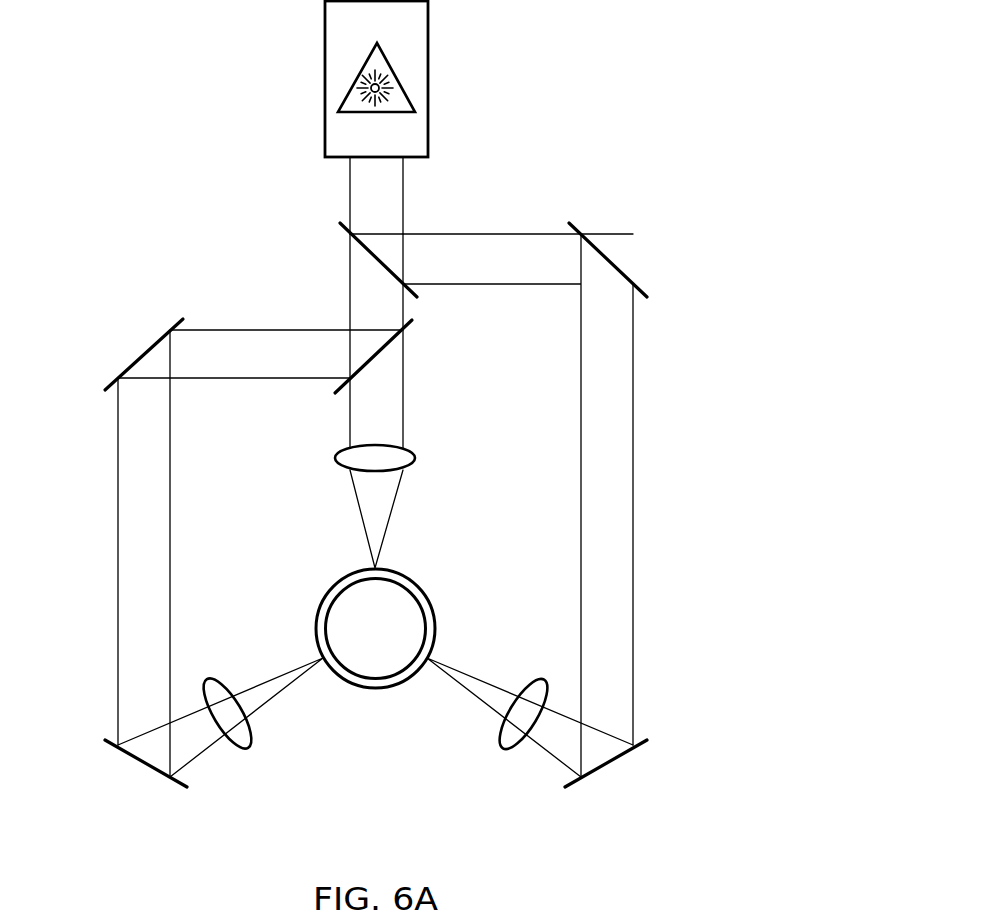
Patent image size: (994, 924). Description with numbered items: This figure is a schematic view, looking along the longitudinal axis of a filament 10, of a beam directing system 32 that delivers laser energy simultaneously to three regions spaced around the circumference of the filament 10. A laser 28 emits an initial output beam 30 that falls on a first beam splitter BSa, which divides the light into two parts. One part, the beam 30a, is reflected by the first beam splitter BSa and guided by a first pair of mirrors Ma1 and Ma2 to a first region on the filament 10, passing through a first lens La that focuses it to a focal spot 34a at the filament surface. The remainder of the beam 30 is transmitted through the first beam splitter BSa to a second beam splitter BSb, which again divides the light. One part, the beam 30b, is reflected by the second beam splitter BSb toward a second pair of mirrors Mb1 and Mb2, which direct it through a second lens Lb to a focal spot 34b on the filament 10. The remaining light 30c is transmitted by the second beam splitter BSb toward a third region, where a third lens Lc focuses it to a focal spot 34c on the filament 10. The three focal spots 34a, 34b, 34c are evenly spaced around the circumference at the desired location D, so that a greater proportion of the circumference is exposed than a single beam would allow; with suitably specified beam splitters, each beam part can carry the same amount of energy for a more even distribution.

The laser 28 is at (428, 48).
The initial output beam 30 is at (349, 188).
The first beam part 30a is at (468, 233).
The second beam part 30b is at (262, 330).
The remainder beam part 30c is at (405, 412).
The first beam splitter BSa is at (345, 232).
The second beam splitter BSb is at (410, 325).
The first mirror of first pair Ma1 is at (610, 258).
The second mirror of first pair Ma2 is at (607, 765).
The first mirror of second pair Mb1 is at (143, 350).
The second mirror of second pair Mb2 is at (148, 765).
The third lens Lc is at (415, 460).
The first lens La is at (500, 748).
The second lens Lb is at (248, 748).
The first focal spot 34a is at (427, 658).
The second focal spot 34b is at (320, 658).
The third focal spot 34c is at (378, 570).
The desired location D is at (432, 598).
The filament 10 is at (380, 690).
The laser processing system 32 is at (730, 339).